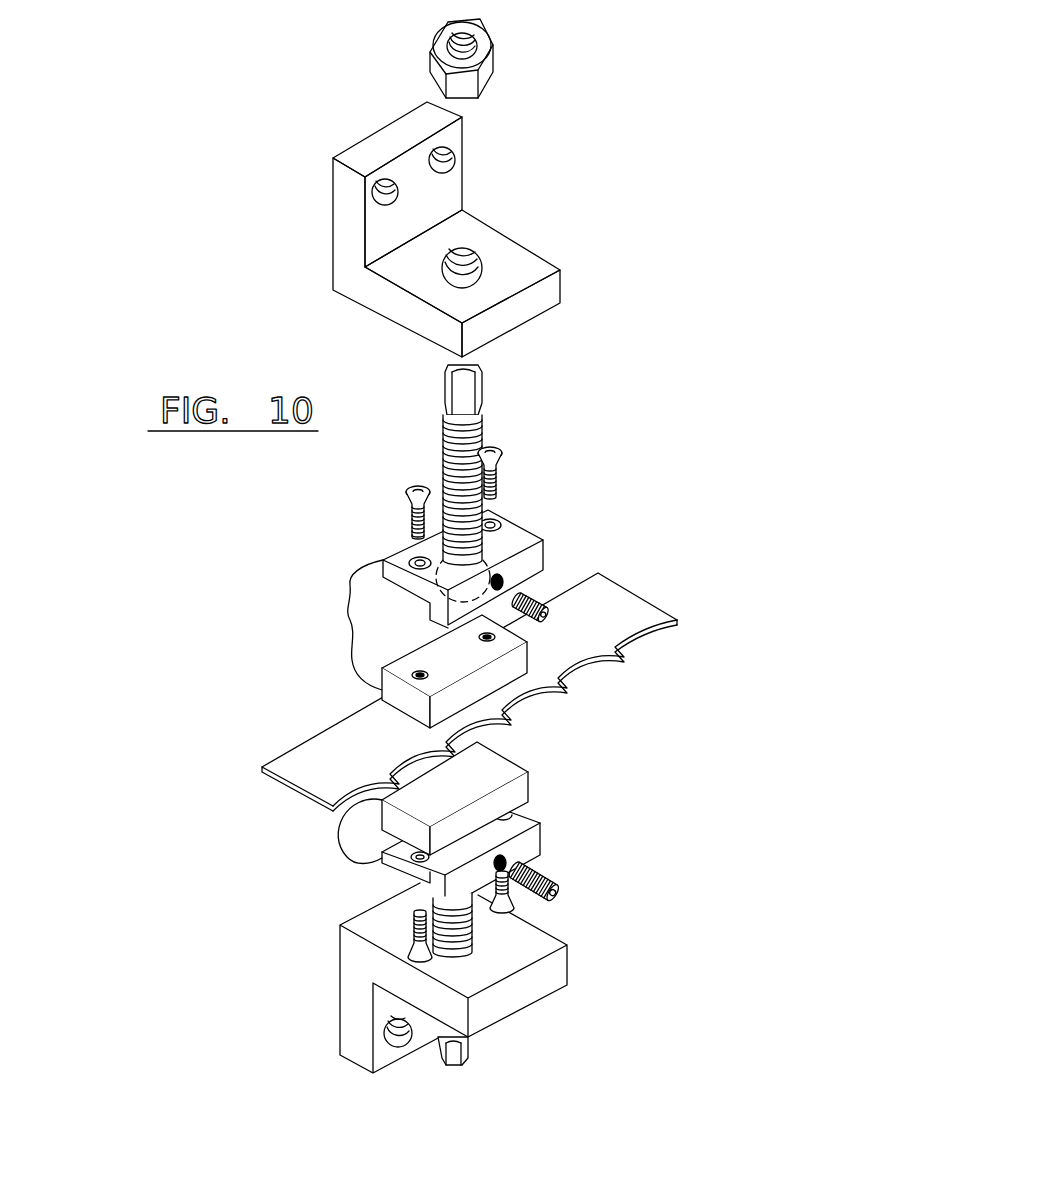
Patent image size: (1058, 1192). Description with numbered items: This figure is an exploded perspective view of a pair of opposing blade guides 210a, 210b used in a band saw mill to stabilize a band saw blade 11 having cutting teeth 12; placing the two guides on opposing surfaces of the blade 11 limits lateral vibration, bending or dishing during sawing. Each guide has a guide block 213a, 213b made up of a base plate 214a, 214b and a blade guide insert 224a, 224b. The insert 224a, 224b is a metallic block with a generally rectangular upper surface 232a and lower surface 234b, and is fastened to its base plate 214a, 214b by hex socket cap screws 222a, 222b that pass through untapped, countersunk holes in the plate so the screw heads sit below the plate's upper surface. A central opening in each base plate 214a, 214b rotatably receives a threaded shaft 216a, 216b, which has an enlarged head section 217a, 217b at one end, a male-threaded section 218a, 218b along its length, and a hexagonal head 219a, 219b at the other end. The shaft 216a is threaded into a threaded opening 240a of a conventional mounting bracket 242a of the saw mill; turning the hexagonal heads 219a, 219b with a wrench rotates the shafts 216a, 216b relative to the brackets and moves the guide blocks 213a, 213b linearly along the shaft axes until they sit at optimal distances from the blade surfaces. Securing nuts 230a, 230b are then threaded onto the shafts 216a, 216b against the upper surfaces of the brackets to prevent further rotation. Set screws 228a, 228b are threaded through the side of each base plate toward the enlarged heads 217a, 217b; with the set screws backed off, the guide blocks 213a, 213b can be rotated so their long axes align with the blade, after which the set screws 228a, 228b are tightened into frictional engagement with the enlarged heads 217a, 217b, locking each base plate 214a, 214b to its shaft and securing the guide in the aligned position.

The band saw blade 11 is at (549, 685).
The cutting teeth 12 is at (630, 652).
The blade guide 210a is at (372, 378).
The blade guide 210b is at (567, 827).
The guide block 213a is at (325, 630).
The guide block 213b is at (318, 835).
The base plate 214a is at (455, 553).
The base plate 214b is at (418, 836).
The threaded shaft 216a is at (579, 425).
The threaded shaft 216b is at (444, 1013).
The enlarged head section 217a is at (478, 572).
The enlarged head section 217b is at (480, 826).
The male-threaded section 218a is at (487, 422).
The male-threaded section 218b is at (430, 882).
The hexagonal head 219a is at (465, 372).
The hexagonal head 219b is at (447, 1062).
The cap screws 222a is at (430, 492).
The cap screws 222b is at (435, 942).
The blade guide insert 224a is at (327, 671).
The blade guide insert 224b is at (578, 766).
The set screw 228a is at (543, 590).
The set screw 228b is at (563, 890).
The securing nut 230a is at (505, 35).
The securing nut 230b is at (440, 1032).
The upper surface 232a is at (447, 673).
The lower surface 234b is at (480, 753).
The threaded opening 240a is at (470, 263).
The mounting bracket 242a is at (540, 229).